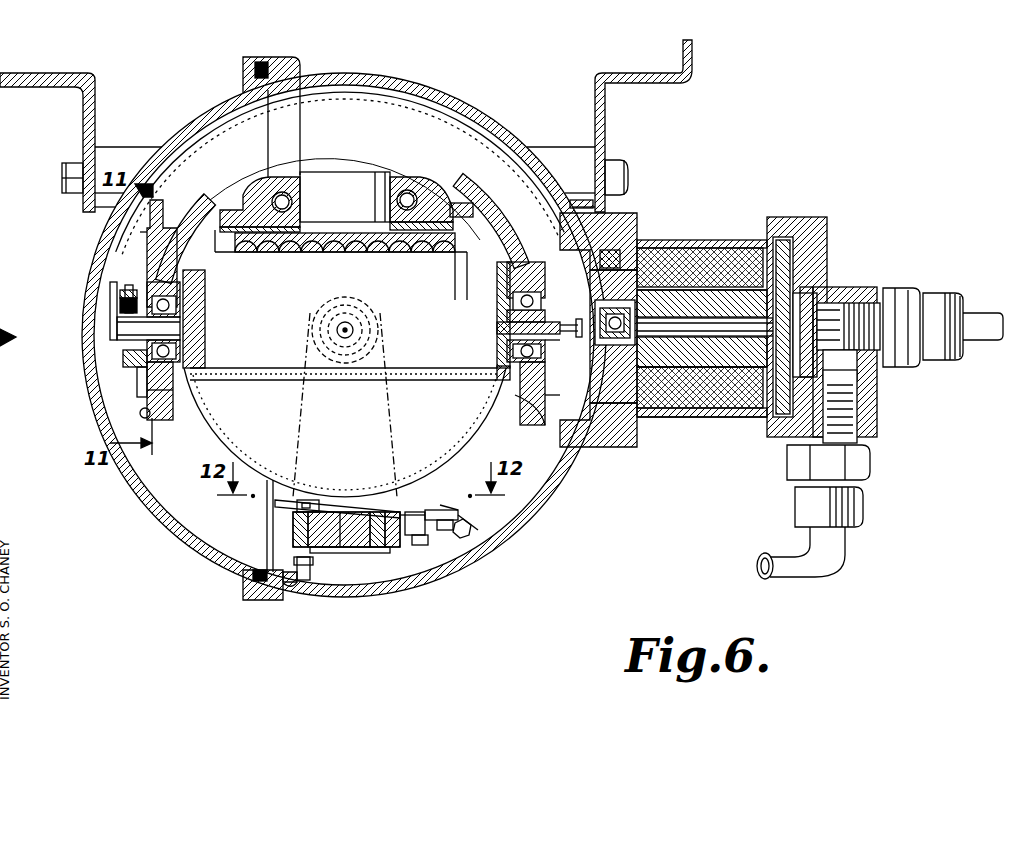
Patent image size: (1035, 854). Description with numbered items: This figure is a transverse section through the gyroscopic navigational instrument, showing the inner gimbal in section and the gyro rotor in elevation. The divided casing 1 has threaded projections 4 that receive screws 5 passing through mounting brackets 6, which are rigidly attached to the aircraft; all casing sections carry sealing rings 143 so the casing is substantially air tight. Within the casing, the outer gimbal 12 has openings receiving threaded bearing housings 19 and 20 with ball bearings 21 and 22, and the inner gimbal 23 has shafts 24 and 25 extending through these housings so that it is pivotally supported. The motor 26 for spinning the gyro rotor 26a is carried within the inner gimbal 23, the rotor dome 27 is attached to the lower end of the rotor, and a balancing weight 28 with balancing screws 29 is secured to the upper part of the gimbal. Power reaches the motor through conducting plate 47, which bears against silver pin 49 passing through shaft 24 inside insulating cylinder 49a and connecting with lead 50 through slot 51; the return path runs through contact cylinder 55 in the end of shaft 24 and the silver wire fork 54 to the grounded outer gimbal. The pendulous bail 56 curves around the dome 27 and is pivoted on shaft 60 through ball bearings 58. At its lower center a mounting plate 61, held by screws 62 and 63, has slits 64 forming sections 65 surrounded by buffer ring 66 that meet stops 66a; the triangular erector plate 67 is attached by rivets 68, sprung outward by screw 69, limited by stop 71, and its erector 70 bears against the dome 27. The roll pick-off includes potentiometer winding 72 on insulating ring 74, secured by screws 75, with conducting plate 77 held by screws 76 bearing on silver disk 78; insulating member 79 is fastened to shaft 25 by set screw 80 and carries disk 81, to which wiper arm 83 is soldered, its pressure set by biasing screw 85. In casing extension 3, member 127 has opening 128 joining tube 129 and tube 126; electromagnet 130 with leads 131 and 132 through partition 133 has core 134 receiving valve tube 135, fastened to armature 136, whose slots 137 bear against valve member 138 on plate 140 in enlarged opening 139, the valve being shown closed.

The divided casing 1 is at (466, 99).
The extension 3 is at (703, 236).
The projections 4 is at (120, 147).
The screws 5 is at (62, 180).
The mounting brackets 6 is at (55, 73).
The outer gimbal 12 is at (197, 216).
The bearing housing 19 is at (500, 286).
The bearing housing 20 is at (167, 289).
The ball bearings 21 is at (507, 300).
The ball bearings 22 is at (170, 310).
The inner gimbal 23 is at (226, 213).
The shaft 24 is at (500, 328).
The shaft 25 is at (170, 328).
The motor 26 is at (331, 250).
The gyro rotor 26a is at (327, 392).
The rotor dome 27 is at (347, 431).
The balancing weight 28 is at (392, 180).
The balancing screws 29 is at (284, 194).
The conducting plate 47 is at (567, 320).
The silver pin 49 is at (548, 344).
The insulating cylinder 49a is at (507, 347).
The lead 50 is at (392, 219).
The slot 51 is at (486, 238).
The silver wire fork 54 is at (542, 305).
The contact cylinder 55 is at (546, 362).
The pendulous bail 56 is at (372, 553).
The ball bearings 58 is at (356, 305).
The shaft 60 is at (354, 326).
The mounting plate 61 is at (312, 572).
The screw 62 is at (293, 530).
The screw 63 is at (418, 546).
The slits 64 is at (432, 545).
The sections 65 is at (470, 535).
The buffer ring 66 is at (480, 531).
The stops 66a is at (545, 426).
The erector plate 67 is at (412, 512).
The rivets 68 is at (455, 510).
The screw 69 is at (450, 532).
The erector 70 is at (350, 505).
The stop 71 is at (316, 500).
The potentiometer winding 72 is at (140, 415).
The insulating ring 74 is at (155, 433).
The screws 75 is at (148, 240).
The screws 76 is at (150, 218).
The conducting plate 77 is at (112, 283).
The silver disk 78 is at (120, 351).
The insulating member 79 is at (118, 302).
The set screw 80 is at (122, 292).
The silver disk 81 is at (140, 375).
The wiper arm 83 is at (146, 395).
The biasing screw 85 is at (125, 360).
The tube 126 is at (832, 562).
The member 127 is at (830, 240).
The opening 128 is at (833, 292).
The tube 129 is at (984, 313).
The electromagnet 130 is at (745, 250).
The lead 131 is at (572, 280).
The lead 132 is at (578, 395).
The partition 133 is at (630, 268).
The core 134 is at (720, 300).
The valve tube 135 is at (742, 419).
The armature 136 is at (784, 245).
The slots 137 is at (722, 380).
The valve member 138 is at (686, 320).
The enlarged opening 139 is at (660, 372).
The plate 140 is at (620, 345).
The sealing rings 143 is at (254, 68).